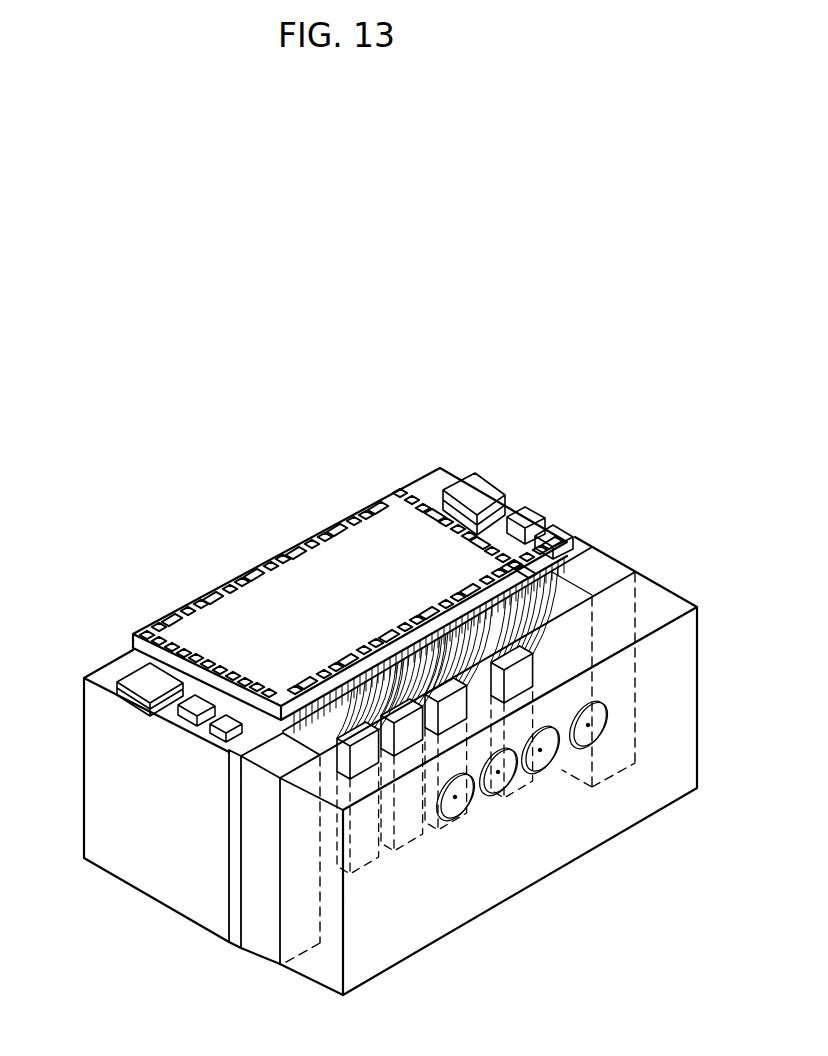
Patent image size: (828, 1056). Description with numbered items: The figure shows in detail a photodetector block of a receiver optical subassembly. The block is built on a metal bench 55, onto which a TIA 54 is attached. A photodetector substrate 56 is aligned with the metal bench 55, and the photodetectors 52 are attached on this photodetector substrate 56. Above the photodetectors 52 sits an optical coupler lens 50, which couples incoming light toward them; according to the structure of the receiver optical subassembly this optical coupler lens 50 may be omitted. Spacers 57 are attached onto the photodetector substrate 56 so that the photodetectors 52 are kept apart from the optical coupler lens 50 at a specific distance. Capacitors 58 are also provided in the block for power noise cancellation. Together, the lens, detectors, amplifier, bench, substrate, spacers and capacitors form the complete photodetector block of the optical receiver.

The optical coupler lens 50 is at (668, 601).
The photodetectors 52 is at (484, 640).
The TIA 54 is at (253, 607).
The metal bench 55 is at (95, 791).
The photodetector substrate 56 is at (581, 552).
The spacers 57 is at (618, 564).
The capacitors 58 is at (140, 683).